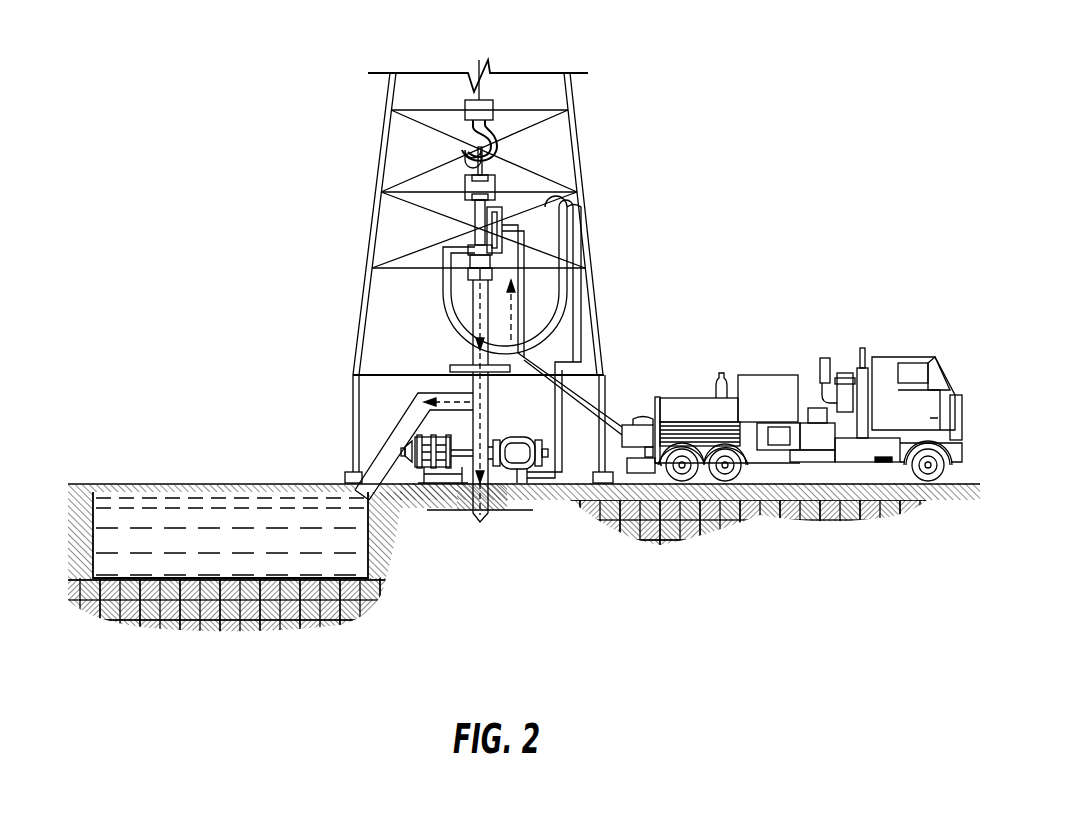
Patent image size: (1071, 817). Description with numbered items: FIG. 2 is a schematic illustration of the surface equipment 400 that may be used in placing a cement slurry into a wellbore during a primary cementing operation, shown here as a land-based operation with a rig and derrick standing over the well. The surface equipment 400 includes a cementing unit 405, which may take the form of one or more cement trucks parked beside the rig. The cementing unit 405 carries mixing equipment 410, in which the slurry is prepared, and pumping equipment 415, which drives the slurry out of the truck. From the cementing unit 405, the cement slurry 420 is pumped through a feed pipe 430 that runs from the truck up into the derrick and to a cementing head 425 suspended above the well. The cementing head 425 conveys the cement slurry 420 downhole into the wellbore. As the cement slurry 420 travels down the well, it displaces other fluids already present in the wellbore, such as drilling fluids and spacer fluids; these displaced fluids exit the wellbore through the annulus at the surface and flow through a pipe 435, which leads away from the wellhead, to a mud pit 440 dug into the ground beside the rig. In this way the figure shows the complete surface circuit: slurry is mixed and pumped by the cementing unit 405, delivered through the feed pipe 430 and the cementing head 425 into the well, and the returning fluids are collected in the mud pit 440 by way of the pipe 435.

The surface equipment 400 is at (760, 65).
The cementing unit 405 is at (865, 466).
The mixing equipment 410 is at (780, 440).
The pumping equipment 415 is at (642, 412).
The cement slurry 420 is at (577, 393).
The cementing head 425 is at (502, 174).
The feed pipe 430 is at (478, 318).
The pipe 435 is at (388, 474).
The mud pit 440 is at (227, 578).